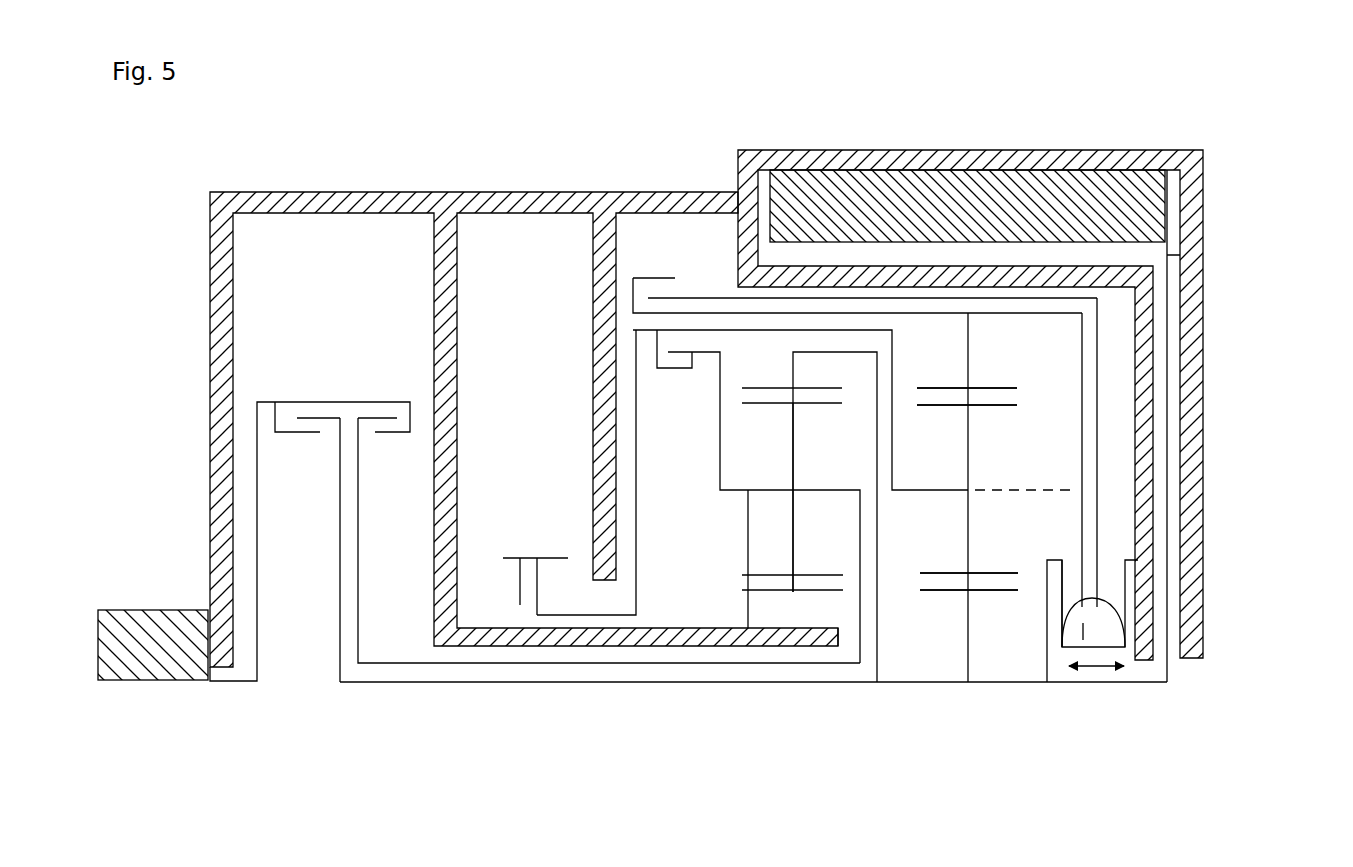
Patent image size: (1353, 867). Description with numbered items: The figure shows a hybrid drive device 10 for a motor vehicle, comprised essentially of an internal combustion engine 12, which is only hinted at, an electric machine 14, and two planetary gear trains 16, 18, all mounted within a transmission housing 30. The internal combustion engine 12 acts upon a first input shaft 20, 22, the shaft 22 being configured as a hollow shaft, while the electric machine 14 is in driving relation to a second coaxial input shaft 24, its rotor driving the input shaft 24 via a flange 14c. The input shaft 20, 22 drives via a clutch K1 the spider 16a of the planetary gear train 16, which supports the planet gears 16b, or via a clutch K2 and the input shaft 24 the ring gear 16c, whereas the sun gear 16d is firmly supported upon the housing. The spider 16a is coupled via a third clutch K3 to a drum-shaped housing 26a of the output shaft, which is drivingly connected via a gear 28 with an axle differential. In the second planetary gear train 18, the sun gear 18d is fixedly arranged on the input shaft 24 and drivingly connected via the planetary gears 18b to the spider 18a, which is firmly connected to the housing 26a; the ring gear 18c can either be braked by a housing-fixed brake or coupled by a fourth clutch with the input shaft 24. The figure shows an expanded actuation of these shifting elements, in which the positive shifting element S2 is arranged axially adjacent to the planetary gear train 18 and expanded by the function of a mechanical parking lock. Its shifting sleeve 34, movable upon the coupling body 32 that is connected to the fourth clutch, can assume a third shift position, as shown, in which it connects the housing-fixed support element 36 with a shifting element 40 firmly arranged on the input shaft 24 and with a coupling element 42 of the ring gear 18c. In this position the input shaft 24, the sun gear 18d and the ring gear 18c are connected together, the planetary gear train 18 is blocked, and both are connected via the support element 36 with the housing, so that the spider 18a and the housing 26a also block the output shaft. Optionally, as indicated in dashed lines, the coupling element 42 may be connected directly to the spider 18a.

The hybrid drive device 10 is at (482, 154).
The internal combustion engine 12 is at (150, 609).
The electric machine 14 is at (1027, 164).
The flange 14c is at (1175, 254).
The planetary gear train 16 is at (950, 762).
The spider 16a is at (793, 557).
The planet gears 16b is at (815, 592).
The ring gear 16c is at (760, 391).
The sun gear 16d is at (828, 639).
The planetary gear train 18 is at (1290, 299).
The spider 18a is at (940, 489).
The planetary gears 18b is at (970, 423).
The ring gear 18c is at (970, 359).
The sun gear 18d is at (997, 573).
The first input shaft 20 is at (251, 683).
The first input shaft 22 is at (397, 665).
The second input shaft 24 is at (460, 683).
The drum-shaped housing 26a is at (638, 596).
The gear 28 is at (520, 605).
The transmission housing 30 is at (210, 337).
The coupling body 32 is at (1128, 608).
The shifting sleeve 34 is at (1103, 650).
The support element 36 is at (1127, 606).
The shifting element 40 is at (1060, 581).
The coupling element 42 is at (1065, 612).
The clutch K1 is at (386, 414).
The clutch K2 is at (313, 414).
The third clutch K3 is at (690, 369).
The positive shifting element S2 is at (1220, 785).